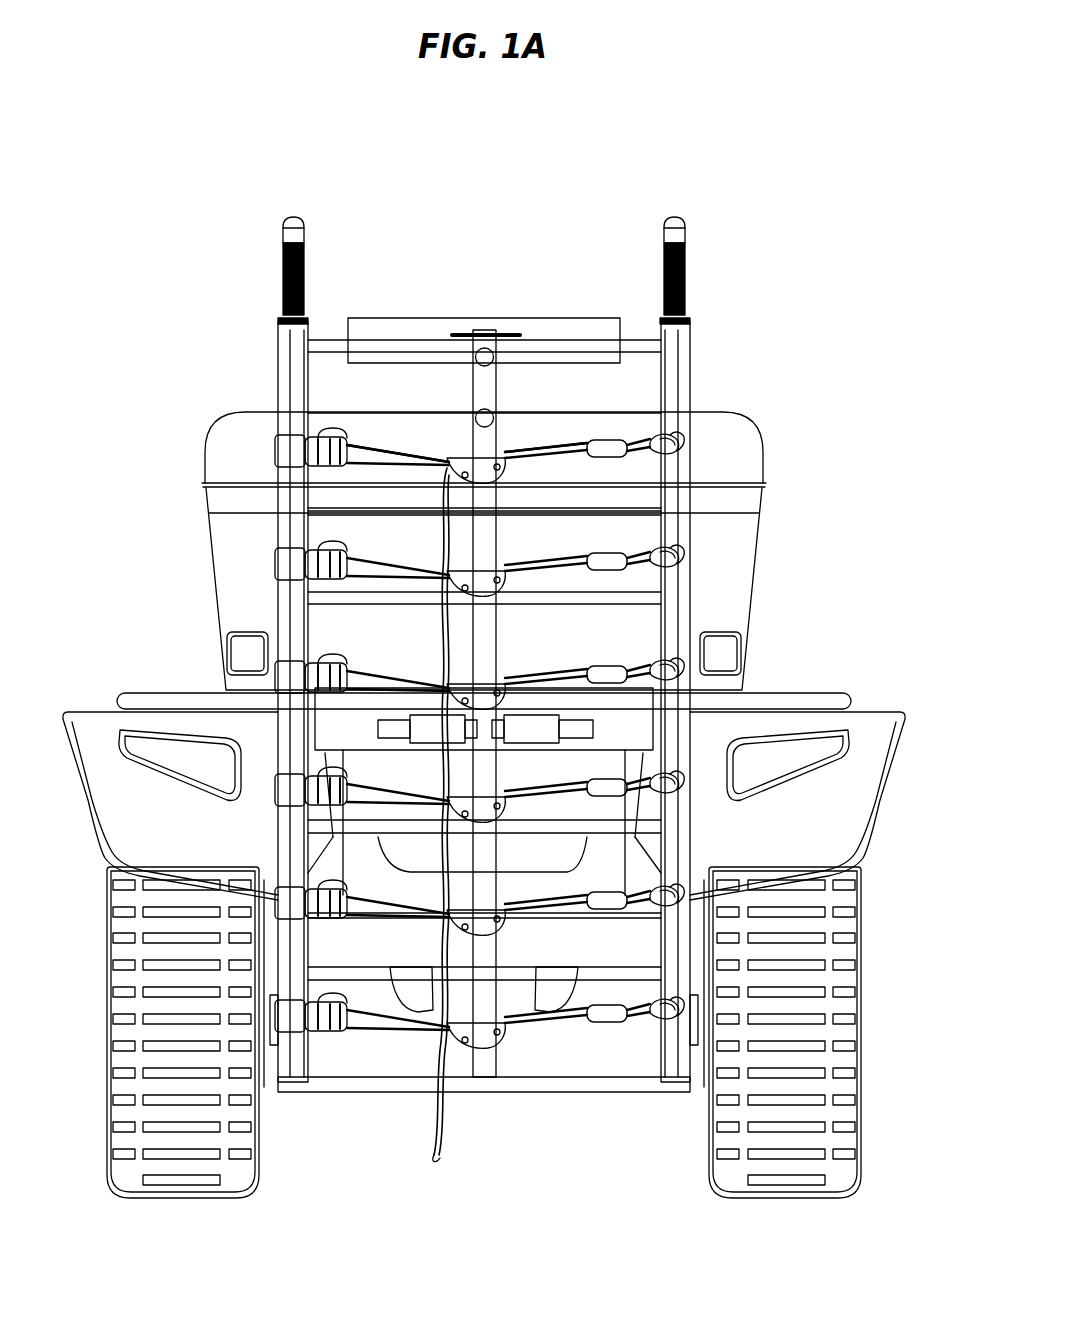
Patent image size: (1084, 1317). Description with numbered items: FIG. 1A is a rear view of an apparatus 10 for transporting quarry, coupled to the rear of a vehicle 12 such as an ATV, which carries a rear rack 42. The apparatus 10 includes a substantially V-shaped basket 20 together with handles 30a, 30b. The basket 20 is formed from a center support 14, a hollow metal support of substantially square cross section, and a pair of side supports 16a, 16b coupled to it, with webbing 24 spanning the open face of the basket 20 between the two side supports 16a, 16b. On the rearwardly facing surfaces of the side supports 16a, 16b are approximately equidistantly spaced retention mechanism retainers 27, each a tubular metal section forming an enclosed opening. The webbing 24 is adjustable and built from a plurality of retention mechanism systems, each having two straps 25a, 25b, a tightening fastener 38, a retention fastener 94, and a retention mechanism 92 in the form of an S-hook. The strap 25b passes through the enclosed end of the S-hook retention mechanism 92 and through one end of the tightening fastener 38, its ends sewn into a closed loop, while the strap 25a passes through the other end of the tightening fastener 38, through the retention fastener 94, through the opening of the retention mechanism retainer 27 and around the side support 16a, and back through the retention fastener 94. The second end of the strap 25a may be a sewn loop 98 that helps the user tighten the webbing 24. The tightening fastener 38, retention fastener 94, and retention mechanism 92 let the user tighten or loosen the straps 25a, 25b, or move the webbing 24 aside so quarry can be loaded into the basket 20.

The apparatus 10 is at (738, 272).
The vehicle 12 is at (875, 750).
The center support 14 is at (492, 392).
The side support 16a is at (285, 352).
The side support 16b is at (688, 352).
The basket 20 is at (506, 295).
The webbing 24 is at (600, 632).
The strap 25a is at (380, 455).
The strap 25b is at (555, 462).
The retention mechanism retainer 27 is at (788, 858).
The handle 30a is at (283, 234).
The handle 30b is at (685, 234).
The tightening fastener 38 is at (483, 1045).
The rear rack 42 is at (147, 690).
The retention mechanism 92 is at (660, 1036).
The retention fastener 94 is at (333, 1030).
The loop 98 is at (428, 510).